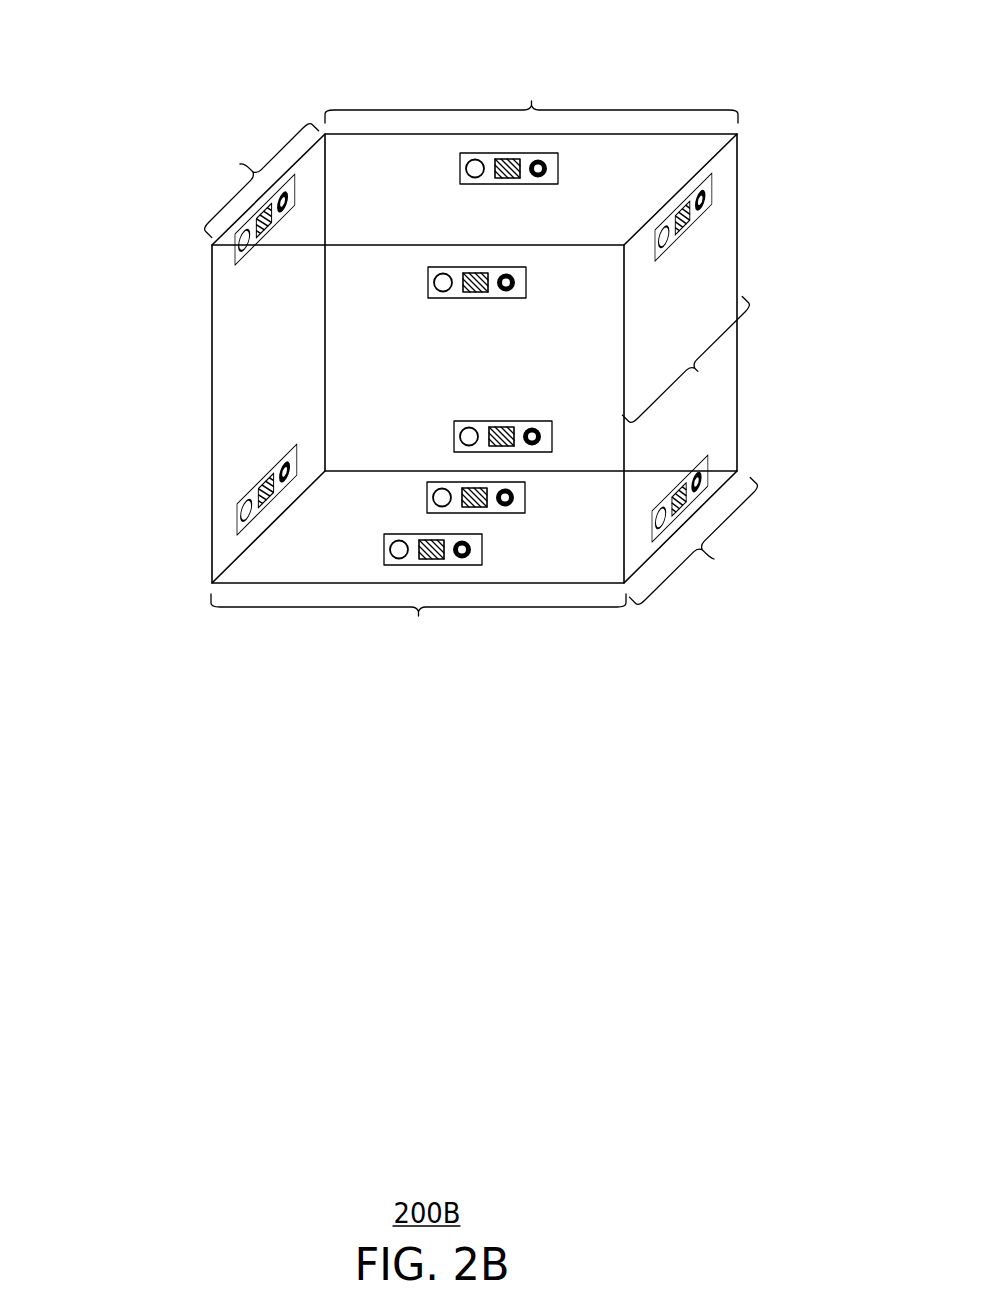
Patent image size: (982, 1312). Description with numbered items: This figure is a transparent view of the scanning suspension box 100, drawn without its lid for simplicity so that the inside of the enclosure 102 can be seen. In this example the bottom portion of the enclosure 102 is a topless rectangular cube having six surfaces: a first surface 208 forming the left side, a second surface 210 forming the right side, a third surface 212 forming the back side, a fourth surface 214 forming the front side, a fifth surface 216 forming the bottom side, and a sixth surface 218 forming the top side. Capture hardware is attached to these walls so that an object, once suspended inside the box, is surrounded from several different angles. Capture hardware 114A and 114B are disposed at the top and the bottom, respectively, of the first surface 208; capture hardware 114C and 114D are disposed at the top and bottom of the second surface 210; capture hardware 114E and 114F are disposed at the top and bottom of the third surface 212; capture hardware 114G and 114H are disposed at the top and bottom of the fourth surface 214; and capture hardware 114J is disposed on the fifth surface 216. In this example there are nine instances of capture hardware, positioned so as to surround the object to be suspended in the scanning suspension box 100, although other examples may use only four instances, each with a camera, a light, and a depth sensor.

The scanning suspension box 100 is at (170, 565).
The enclosure 102 is at (193, 344).
The capture hardware 114A is at (278, 226).
The capture hardware 114B is at (248, 492).
The capture hardware 114C is at (678, 238).
The capture hardware 114D is at (667, 498).
The capture hardware 114E is at (460, 168).
The capture hardware 114F is at (490, 421).
The capture hardware 114G is at (477, 299).
The capture hardware 114H is at (403, 534).
The capture hardware 114J is at (497, 513).
The first surface 208 is at (252, 181).
The second surface 210 is at (698, 371).
The third surface 212 is at (531, 97).
The fourth surface 214 is at (418, 624).
The fifth surface 216 is at (699, 541).
The sixth surface 218 is at (649, 154).